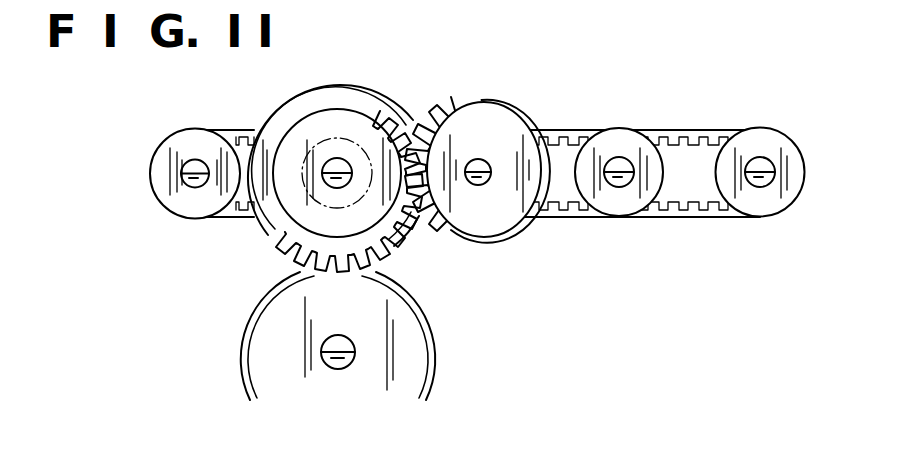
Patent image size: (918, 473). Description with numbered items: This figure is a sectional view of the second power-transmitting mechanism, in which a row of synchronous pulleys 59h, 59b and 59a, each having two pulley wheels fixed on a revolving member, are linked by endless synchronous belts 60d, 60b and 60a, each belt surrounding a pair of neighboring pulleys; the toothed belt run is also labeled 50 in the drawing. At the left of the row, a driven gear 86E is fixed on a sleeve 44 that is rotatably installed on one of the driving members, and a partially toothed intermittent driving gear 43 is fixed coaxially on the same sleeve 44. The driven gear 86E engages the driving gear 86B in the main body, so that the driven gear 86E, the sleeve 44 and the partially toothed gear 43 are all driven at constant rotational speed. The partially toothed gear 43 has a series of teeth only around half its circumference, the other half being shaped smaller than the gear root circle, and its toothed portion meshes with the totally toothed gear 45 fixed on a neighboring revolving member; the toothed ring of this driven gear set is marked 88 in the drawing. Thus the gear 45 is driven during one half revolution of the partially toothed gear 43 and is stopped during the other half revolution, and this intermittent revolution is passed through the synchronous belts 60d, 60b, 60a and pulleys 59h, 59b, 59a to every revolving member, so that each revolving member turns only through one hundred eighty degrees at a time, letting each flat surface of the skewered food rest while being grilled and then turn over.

The partially toothed intermittent driving gear 43 is at (370, 138).
The sleeve 44 is at (312, 150).
The totally toothed gear 45 is at (490, 131).
The timing belt 50 is at (700, 120).
The synchronous pulley 59a is at (783, 153).
The synchronous pulley 59b is at (620, 148).
The synchronous pulley 59h is at (166, 153).
The endless synchronous belt 60a is at (690, 218).
The endless synchronous belt 60b is at (563, 214).
The endless synchronous belt 60d is at (233, 218).
The driving gear 86B is at (410, 346).
The driven gear 86E is at (326, 100).
The gear 88 is at (438, 97).